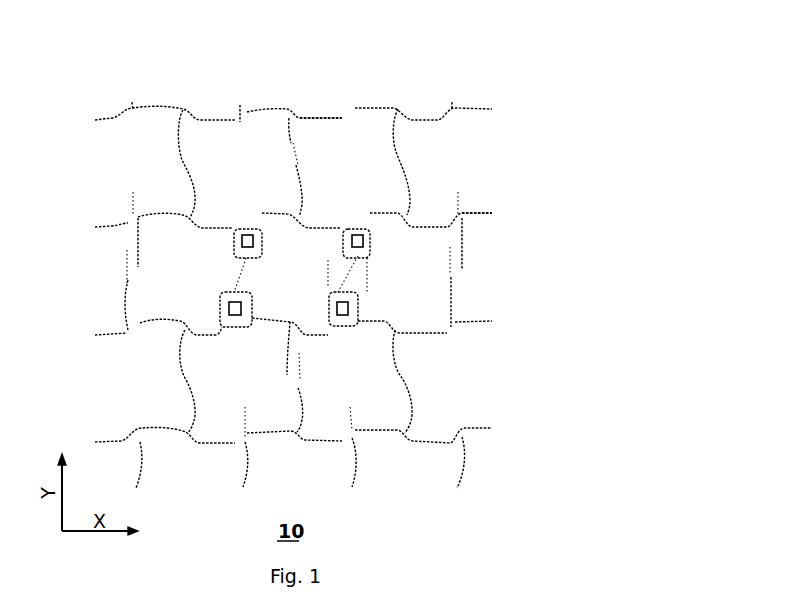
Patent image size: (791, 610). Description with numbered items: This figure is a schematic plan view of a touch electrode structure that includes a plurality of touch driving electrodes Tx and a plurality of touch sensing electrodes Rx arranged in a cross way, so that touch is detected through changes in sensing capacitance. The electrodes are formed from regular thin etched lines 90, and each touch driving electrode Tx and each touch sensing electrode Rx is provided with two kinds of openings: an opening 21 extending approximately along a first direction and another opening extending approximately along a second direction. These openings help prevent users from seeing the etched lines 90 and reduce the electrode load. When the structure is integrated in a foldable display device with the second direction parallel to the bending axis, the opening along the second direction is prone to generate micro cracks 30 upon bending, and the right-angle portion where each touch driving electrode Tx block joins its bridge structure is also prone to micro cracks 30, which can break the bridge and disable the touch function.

The opening extending along first direction 21 is at (102, 227).
The micro cracks 30 is at (127, 267).
The etched lines 90 is at (408, 178).
The touch driving electrode Tx is at (340, 145).
The touch sensing electrode Rx is at (475, 285).